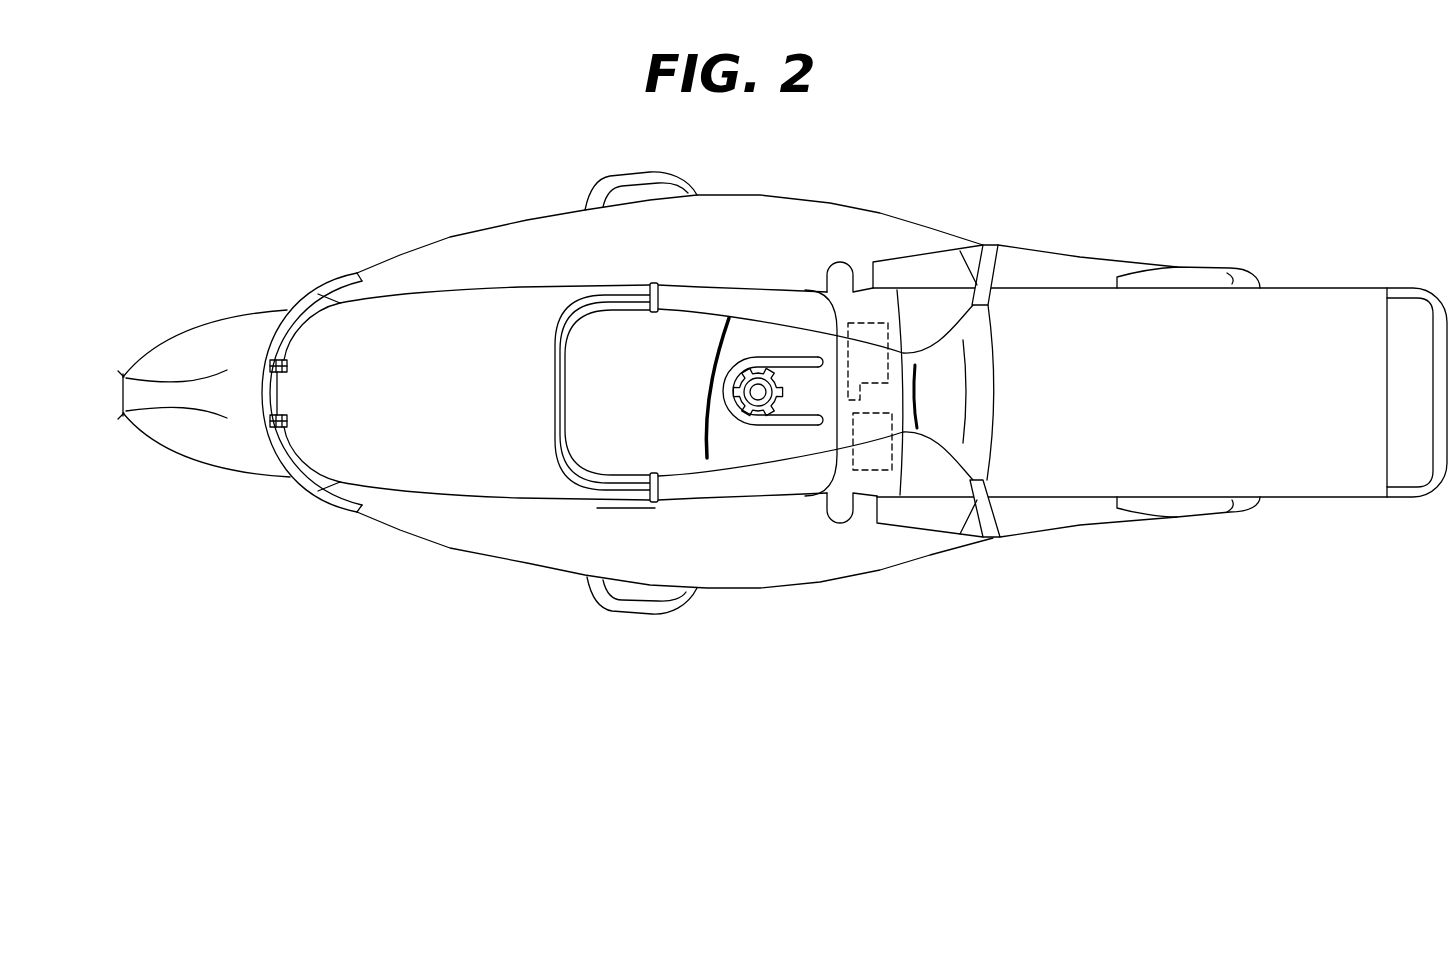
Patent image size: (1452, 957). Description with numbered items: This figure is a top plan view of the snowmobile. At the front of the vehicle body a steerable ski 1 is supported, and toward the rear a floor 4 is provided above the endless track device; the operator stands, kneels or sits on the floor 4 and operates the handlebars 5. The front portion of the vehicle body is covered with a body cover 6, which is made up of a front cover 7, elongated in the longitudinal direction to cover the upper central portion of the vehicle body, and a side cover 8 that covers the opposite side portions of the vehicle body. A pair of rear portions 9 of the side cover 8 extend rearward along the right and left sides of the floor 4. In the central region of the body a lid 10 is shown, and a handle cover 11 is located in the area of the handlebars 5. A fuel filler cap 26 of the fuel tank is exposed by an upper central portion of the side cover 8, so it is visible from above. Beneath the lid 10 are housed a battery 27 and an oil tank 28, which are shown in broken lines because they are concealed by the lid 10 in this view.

The steerable ski 1 is at (247, 317).
The floor 4 is at (1220, 406).
The handlebars 5 is at (1000, 515).
The body cover 6 is at (761, 355).
The front cover 7 is at (425, 300).
The side cover 8 is at (477, 245).
The rear portions of the side cover 9 is at (1058, 256).
The lid 10 is at (863, 303).
The handle cover 11 is at (947, 387).
The fuel filler cap 26 is at (763, 392).
The battery 27 is at (880, 457).
The oil tank 28 is at (883, 363).